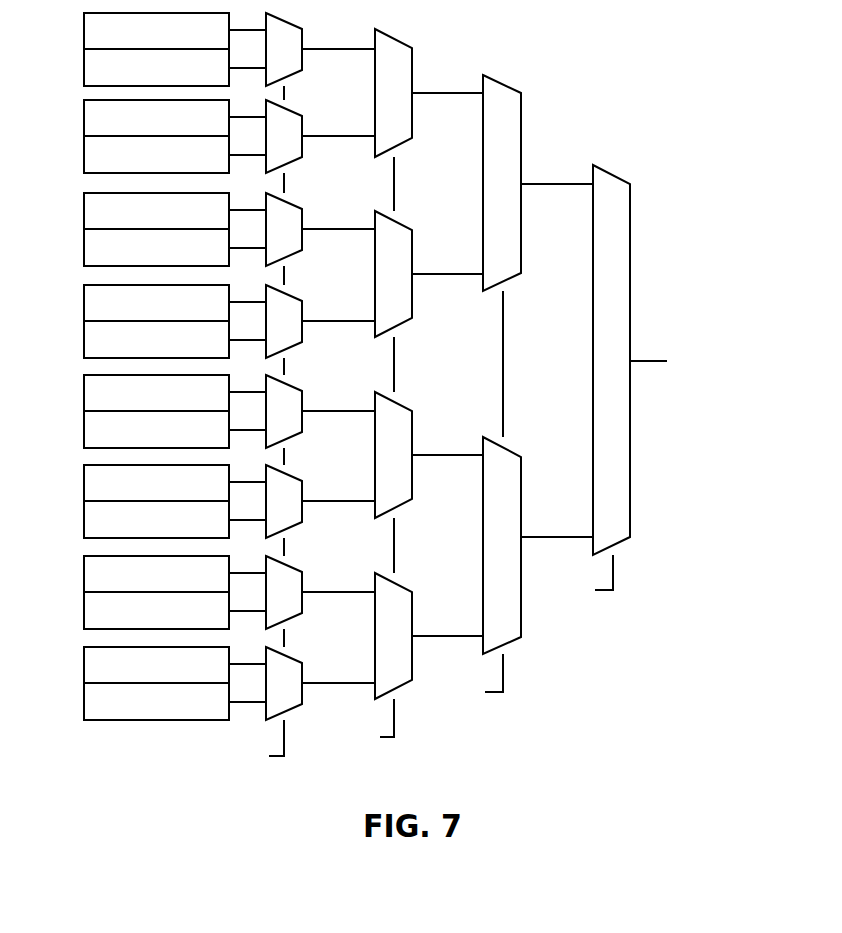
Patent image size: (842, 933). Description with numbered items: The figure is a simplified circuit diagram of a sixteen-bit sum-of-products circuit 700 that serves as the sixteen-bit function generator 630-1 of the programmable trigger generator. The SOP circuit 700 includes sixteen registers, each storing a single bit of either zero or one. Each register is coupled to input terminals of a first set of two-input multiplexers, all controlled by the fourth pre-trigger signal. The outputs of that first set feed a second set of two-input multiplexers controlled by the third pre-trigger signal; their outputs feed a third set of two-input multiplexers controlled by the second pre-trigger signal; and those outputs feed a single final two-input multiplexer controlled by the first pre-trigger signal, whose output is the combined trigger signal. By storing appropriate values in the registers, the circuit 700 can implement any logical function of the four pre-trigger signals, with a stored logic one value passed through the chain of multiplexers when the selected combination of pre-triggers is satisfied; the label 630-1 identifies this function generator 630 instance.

The sum-of-products circuit 700 is at (407, 390).
The 16-bit function generator 630-1 is at (407, 390).
The multiplexer block 630 is at (553, 70).